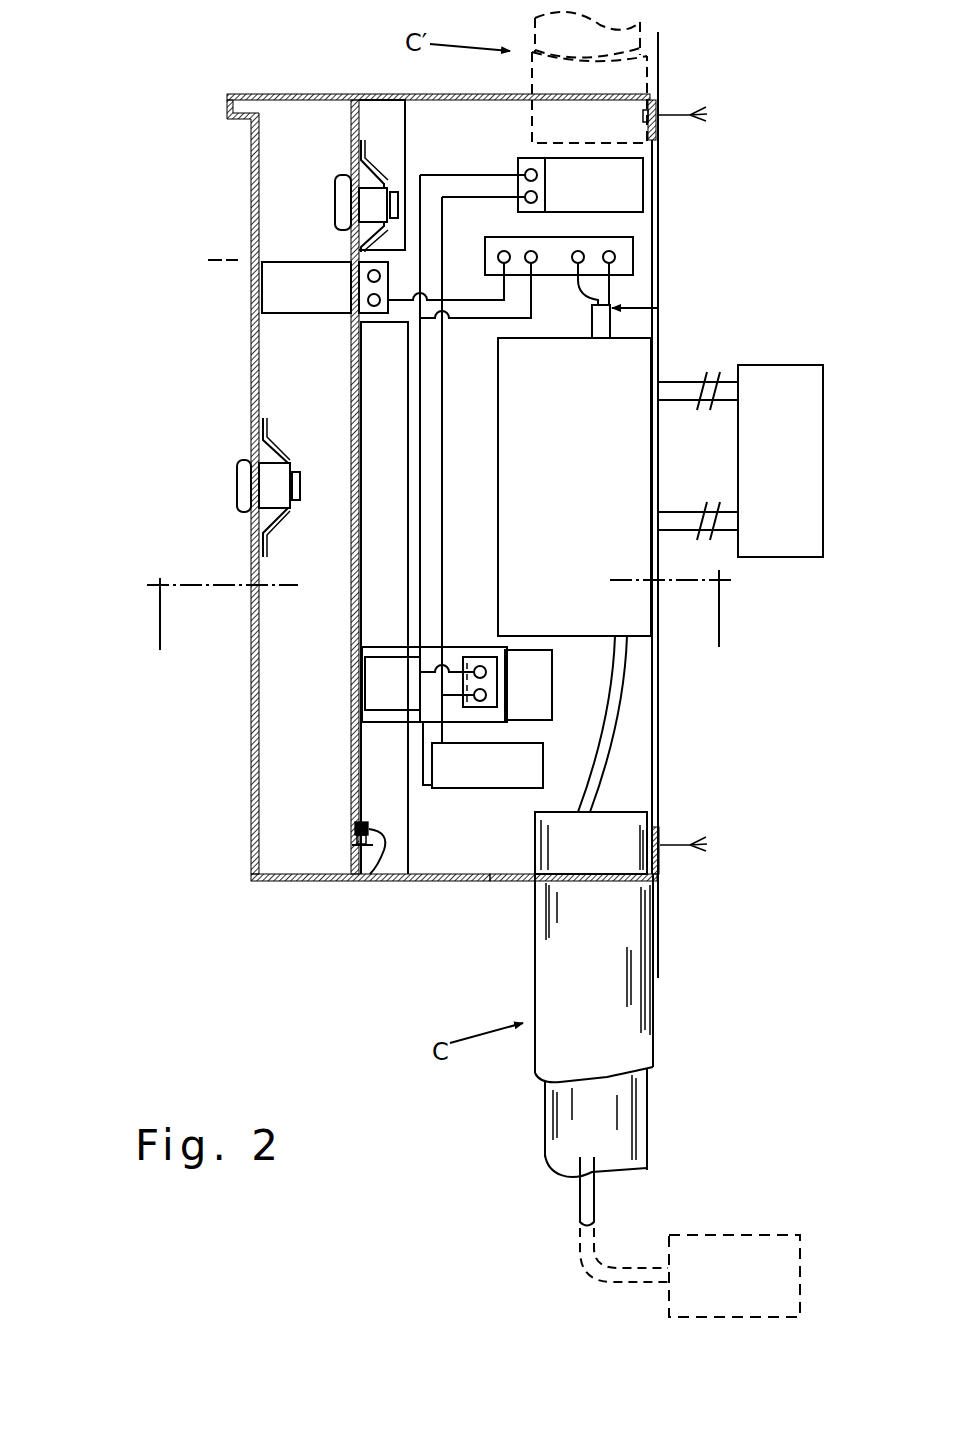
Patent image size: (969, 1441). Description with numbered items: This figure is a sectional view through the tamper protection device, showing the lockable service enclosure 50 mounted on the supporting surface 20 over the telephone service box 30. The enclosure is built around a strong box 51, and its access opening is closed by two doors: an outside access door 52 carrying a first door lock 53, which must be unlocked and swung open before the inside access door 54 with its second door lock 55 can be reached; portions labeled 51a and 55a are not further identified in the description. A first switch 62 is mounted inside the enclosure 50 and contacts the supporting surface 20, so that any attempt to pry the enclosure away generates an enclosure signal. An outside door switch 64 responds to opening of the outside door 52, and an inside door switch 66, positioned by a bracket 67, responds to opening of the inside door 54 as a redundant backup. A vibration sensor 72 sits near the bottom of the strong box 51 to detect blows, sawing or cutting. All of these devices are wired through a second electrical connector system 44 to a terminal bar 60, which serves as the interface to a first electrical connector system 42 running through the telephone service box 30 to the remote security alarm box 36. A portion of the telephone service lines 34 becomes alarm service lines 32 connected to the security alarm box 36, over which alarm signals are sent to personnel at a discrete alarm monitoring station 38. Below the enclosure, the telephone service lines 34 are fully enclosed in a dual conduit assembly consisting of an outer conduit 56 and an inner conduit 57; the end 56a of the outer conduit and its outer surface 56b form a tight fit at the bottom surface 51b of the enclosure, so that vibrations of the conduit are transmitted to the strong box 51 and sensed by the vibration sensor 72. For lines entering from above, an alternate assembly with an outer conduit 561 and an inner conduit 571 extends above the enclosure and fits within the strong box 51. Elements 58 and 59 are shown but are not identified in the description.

The supporting surface 20 is at (660, 925).
The telephone service box 30 is at (625, 338).
The alarm service lines 32 is at (672, 508).
The telephone service lines 34 is at (613, 727).
The security alarm box 36 is at (770, 365).
The discrete alarm monitoring station 38 is at (778, 1233).
The first electrical connector system 42 is at (699, 378).
The second electrical connector system 44 is at (416, 411).
The lockable service enclosure 50 is at (205, 83).
The strong box 51 is at (350, 95).
The bottom wall portion 51a is at (475, 880).
The bottom surface of the enclosure 51b is at (508, 880).
The outside access door 52 is at (247, 238).
The outside door lock 53 is at (280, 480).
The inside access door 54 is at (350, 365).
The second door lock 55 is at (333, 193).
The latch 55a is at (367, 883).
The outer conduit 56 is at (533, 962).
The end of the outer conduit 56a is at (623, 810).
The outer surface of the outer conduit 56b is at (612, 859).
The outer conduit 561 is at (525, 74).
The inner conduit 57 is at (648, 1117).
The inner conduit 571 is at (530, 40).
The wires 58 is at (657, 100).
The wires 59 is at (674, 845).
The terminal bar 60 is at (633, 252).
The first switch 62 is at (620, 155).
The outside door switch 64 is at (322, 260).
The inside door switch 66 is at (403, 710).
The bracket 67 is at (552, 682).
The vibration sensor 72 is at (495, 790).